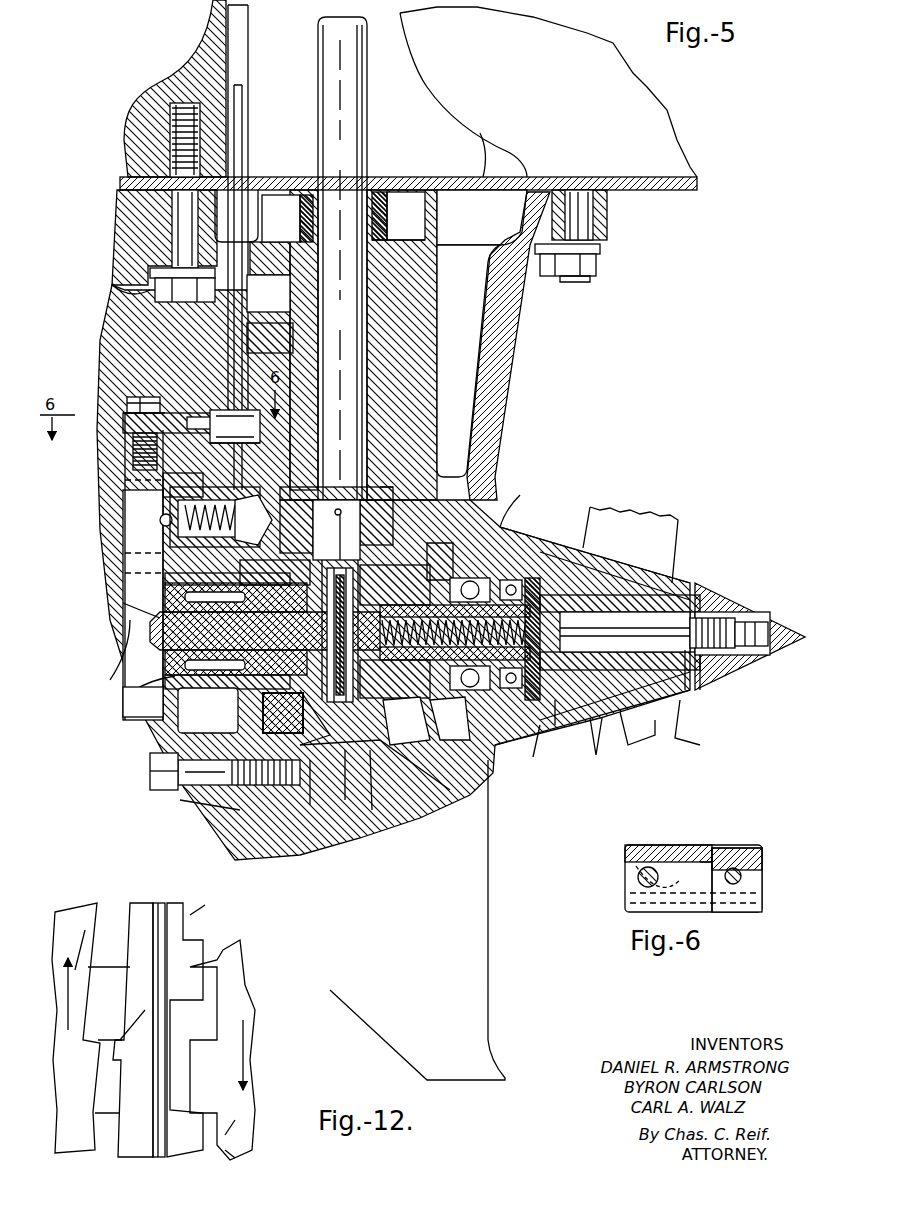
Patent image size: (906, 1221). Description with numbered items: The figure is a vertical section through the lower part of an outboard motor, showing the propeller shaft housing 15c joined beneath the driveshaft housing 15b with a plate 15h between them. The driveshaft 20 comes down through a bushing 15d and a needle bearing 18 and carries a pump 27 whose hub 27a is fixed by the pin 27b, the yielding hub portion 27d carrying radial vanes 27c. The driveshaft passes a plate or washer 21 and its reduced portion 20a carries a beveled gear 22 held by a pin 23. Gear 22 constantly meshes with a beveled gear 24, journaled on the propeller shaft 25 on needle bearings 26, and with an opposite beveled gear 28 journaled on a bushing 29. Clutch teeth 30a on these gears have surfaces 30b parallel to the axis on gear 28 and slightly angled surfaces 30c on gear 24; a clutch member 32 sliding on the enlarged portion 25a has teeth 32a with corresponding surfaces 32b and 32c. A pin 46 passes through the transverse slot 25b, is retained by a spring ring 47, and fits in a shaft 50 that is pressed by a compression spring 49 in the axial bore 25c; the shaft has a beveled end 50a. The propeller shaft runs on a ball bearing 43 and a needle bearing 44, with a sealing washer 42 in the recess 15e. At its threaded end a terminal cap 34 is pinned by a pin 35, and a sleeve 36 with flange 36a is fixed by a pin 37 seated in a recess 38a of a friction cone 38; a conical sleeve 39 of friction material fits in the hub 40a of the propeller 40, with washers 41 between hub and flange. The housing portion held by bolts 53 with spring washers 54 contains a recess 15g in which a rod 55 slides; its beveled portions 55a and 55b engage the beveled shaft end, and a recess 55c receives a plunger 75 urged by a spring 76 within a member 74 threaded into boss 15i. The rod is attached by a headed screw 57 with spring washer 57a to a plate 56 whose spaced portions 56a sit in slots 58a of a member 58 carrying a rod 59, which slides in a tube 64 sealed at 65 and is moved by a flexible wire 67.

In FIG. 5, the driveshaft housing 15b is at (643, 97).
In FIG. 5, the plate 15h is at (697, 181).
In FIG. 5, the bushing 15d is at (435, 284).
In FIG. 5, the propeller shaft housing 15c is at (512, 311).
In FIG. 5, the recess 15e is at (515, 540).
In FIG. 5, the recess 15g is at (115, 725).
In FIG. 5, the boss 15i is at (183, 478).
In FIG. 5, the needle bearing 18 is at (368, 390).
In FIG. 5, the driveshaft 20 is at (368, 98).
In FIG. 5, the reduced portion 20a is at (360, 502).
In FIG. 5, the plate or washer 21 is at (382, 486).
In FIG. 5, the beveled gear 22 is at (388, 512).
In FIG. 5, the pin 23 is at (337, 508).
In FIG. 5, the beveled gear 24 is at (438, 790).
In FIG. 5, the propeller shaft 25 is at (650, 550).
In FIG. 5, the enlarged portion 25a is at (376, 812).
In FIG. 5, the transverse slot 25b is at (388, 522).
In FIG. 5, the axial bore 25c is at (625, 631).
In FIG. 5, the needle bearings 26 is at (420, 572).
In FIG. 5, the pump 27 is at (398, 200).
In FIG. 5, the hub 27a is at (307, 178).
In FIG. 5, the pin 27b is at (280, 232).
In FIG. 5, the radial vanes 27c is at (407, 207).
In FIG. 5, the hub portion 27d is at (400, 229).
In FIG. 5, the beveled gear 28 is at (272, 712).
In FIG. 5, the bushing 29 is at (235, 718).
In FIG. 12, the clutch teeth 30a is at (225, 1135).
In FIG. 12, the tooth surfaces 30b is at (70, 945).
In FIG. 12, the tooth surfaces 30c is at (233, 1158).
In FIG. 5, the clutch member 32 is at (334, 692).
In FIG. 12, the clutch member 32 is at (133, 905).
In FIG. 12, the clutch teeth 32a is at (140, 1025).
In FIG. 12, the tooth surfaces 32b is at (135, 1025).
In FIG. 12, the tooth surfaces 32c is at (205, 900).
In FIG. 5, the terminal cap 34 is at (783, 649).
In FIG. 5, the pin 35 is at (748, 657).
In FIG. 5, the sleeve 36 is at (680, 701).
In FIG. 5, the flange 36a is at (706, 690).
In FIG. 5, the pin 37 is at (554, 722).
In FIG. 5, the friction cone 38 is at (596, 740).
In FIG. 5, the recess 38a is at (535, 742).
In FIG. 5, the conical sleeve 39 is at (616, 742).
In FIG. 5, the propeller 40 is at (665, 530).
In FIG. 5, the propeller hub 40a is at (660, 731).
In FIG. 5, the washers 41 is at (686, 690).
In FIG. 5, the sealing washer 42 is at (526, 572).
In FIG. 5, the ball bearing 43 is at (508, 520).
In FIG. 5, the needle bearing 44 is at (130, 692).
In FIG. 5, the pin 46 is at (344, 598).
In FIG. 5, the retainer spring ring 47 is at (339, 704).
In FIG. 12, the retainer spring ring 47 is at (160, 905).
In FIG. 5, the compression coiled spring 49 is at (489, 780).
In FIG. 5, the shaft 50 is at (160, 678).
In FIG. 5, the beveled end 50a is at (165, 638).
In FIG. 5, the bolts 53 is at (160, 790).
In FIG. 5, the spring washers 54 is at (150, 766).
In FIG. 5, the rod 55 is at (135, 502).
In FIG. 6, the rod 55 is at (627, 864).
In FIG. 5, the beveled portion 55a is at (170, 663).
In FIG. 5, the beveled portion 55b is at (120, 615).
In FIG. 5, the recess 55c is at (160, 520).
In FIG. 5, the member or plate 56 is at (176, 412).
In FIG. 6, the member or plate 56 is at (630, 897).
In FIG. 5, the spaced portions 56a is at (208, 428).
In FIG. 6, the spaced portions 56a is at (762, 852).
In FIG. 5, the headed screw 57 is at (135, 400).
In FIG. 6, the headed screw 57 is at (637, 880).
In FIG. 5, the spring washer 57a is at (125, 410).
In FIG. 5, the member 58 is at (226, 415).
In FIG. 6, the member 58 is at (752, 868).
In FIG. 5, the slots 58a is at (255, 441).
In FIG. 6, the slots 58a is at (723, 852).
In FIG. 5, the rod 59 is at (244, 312).
In FIG. 6, the rod 59 is at (763, 882).
In FIG. 5, the tube 64 is at (250, 112).
In FIG. 5, the rubber seal 65 is at (247, 172).
In FIG. 5, the flexible wire 67 is at (247, 92).
In FIG. 5, the member 74 is at (220, 488).
In FIG. 5, the plunger 75 is at (185, 528).
In FIG. 5, the compression coiled spring 76 is at (250, 505).